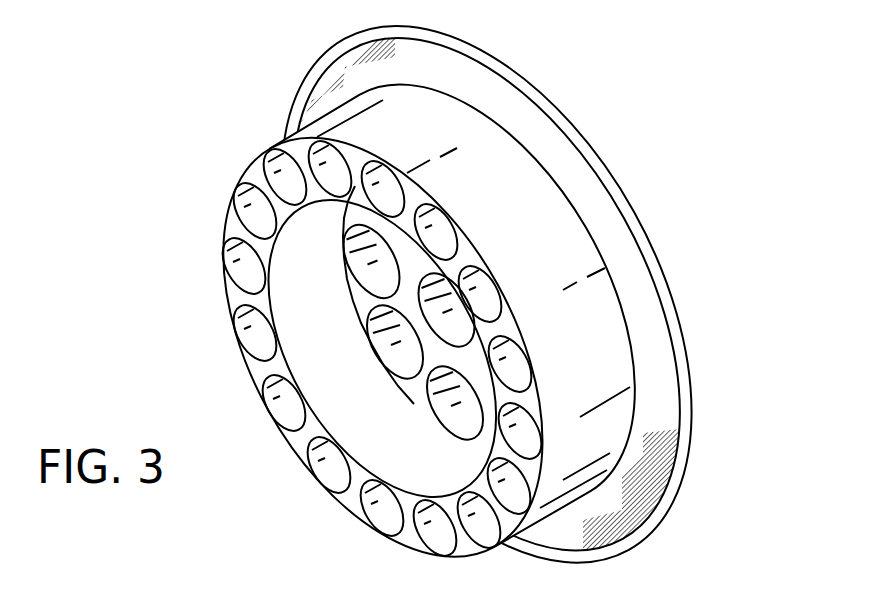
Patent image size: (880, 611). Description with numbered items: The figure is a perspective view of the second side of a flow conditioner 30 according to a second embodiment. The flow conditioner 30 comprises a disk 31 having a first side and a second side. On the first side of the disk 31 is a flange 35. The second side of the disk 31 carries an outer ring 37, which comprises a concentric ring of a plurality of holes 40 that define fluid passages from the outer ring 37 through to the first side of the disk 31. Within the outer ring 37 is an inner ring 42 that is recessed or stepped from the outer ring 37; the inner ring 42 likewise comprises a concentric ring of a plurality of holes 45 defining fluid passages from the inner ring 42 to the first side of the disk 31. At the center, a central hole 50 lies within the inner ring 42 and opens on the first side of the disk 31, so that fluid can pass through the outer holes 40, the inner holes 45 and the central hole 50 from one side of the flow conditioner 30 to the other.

The flow conditioner 30 is at (446, 305).
The disk 31 is at (590, 385).
The flange 35 is at (673, 303).
The outer ring 37 is at (232, 290).
The holes 40 is at (278, 150).
The inner ring 42 is at (418, 397).
The holes 45 is at (395, 360).
The central hole 50 is at (492, 298).